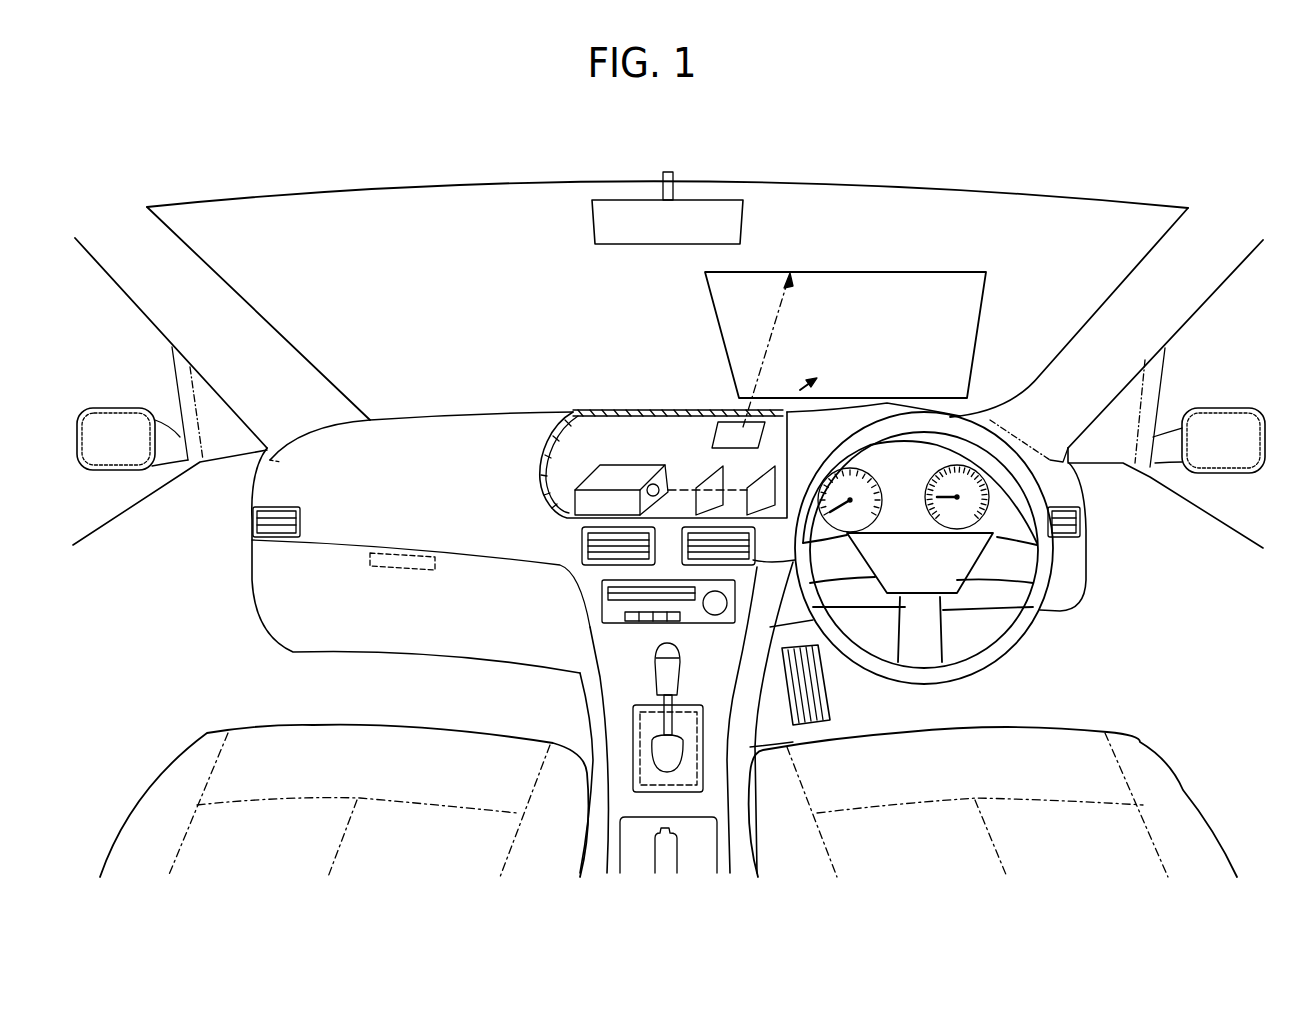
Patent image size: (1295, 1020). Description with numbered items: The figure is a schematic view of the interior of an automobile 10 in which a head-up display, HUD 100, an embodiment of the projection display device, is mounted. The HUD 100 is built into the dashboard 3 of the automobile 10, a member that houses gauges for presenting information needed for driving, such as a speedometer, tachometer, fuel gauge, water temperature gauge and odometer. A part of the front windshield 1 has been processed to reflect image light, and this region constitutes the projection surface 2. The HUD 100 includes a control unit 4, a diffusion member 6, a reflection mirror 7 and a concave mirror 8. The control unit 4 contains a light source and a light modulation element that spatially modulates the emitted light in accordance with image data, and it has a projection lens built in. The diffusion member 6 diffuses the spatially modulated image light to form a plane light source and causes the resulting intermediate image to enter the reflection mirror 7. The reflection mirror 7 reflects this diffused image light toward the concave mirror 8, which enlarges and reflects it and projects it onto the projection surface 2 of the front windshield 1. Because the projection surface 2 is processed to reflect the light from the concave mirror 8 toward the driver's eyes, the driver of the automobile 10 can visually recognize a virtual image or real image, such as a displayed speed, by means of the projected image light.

The front windshield 1 is at (338, 200).
The projection surface 2 is at (948, 287).
The dashboard 3 is at (492, 415).
The control unit 4 is at (600, 463).
The diffusion member 6 is at (705, 487).
The reflection mirror 7 is at (760, 487).
The concave mirror 8 is at (730, 423).
The automobile 10 is at (826, 153).
The head-up display (HUD) 100 is at (578, 468).